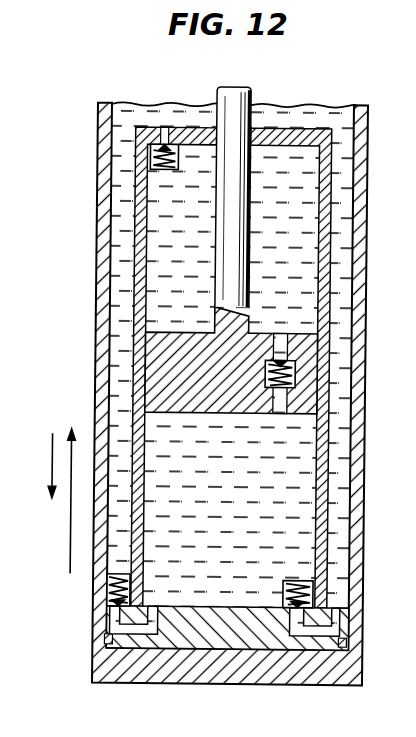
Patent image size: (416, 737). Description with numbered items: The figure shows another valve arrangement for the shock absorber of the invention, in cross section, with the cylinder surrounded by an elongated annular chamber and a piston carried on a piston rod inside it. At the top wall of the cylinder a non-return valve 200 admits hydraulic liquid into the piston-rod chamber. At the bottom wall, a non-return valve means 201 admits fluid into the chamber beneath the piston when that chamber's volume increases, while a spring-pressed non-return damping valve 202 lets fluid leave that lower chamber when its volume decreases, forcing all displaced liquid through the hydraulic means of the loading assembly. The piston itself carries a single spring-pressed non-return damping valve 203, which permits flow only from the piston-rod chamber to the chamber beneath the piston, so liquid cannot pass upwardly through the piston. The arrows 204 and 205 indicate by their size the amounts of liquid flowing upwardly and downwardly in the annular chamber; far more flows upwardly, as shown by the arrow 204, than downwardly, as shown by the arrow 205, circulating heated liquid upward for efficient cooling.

The non-return valve 200 is at (162, 145).
The non-return valve means 201 is at (338, 610).
The spring-pressed non-return damping valve 202 is at (108, 605).
The spring-pressed non-return damping valve 203 is at (265, 362).
The arrow 204 is at (72, 536).
The arrow 205 is at (52, 458).